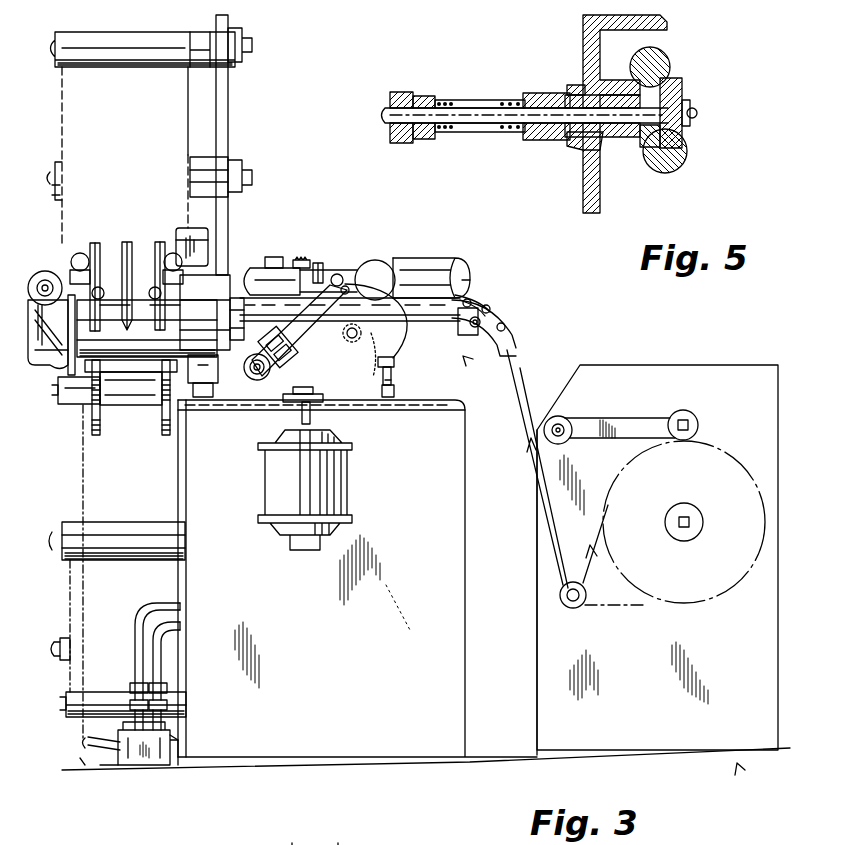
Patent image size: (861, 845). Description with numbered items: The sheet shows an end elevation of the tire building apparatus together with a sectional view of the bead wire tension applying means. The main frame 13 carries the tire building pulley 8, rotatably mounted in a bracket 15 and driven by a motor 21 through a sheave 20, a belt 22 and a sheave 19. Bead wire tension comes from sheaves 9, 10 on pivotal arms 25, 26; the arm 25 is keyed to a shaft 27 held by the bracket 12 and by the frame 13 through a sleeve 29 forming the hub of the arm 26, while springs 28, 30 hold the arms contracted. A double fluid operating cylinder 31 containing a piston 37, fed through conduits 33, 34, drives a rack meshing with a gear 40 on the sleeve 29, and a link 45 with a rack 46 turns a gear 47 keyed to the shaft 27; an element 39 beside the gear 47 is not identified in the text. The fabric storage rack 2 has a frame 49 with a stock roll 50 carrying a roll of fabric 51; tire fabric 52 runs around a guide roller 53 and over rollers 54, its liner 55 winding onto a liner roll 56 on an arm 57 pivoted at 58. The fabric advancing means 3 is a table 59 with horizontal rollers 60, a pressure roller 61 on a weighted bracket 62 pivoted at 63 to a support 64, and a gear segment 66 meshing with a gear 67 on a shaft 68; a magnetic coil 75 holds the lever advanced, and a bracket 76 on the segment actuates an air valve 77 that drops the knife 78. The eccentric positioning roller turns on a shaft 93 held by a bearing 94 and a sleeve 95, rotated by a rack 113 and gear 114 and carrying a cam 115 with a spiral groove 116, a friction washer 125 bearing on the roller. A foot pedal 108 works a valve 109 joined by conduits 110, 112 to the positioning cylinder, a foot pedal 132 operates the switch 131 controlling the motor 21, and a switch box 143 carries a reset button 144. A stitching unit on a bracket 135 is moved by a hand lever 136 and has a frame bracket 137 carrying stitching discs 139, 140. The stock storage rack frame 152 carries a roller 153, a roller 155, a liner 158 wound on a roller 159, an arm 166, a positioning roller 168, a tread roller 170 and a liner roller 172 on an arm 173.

In FIG. 3, the fabric storage rack 2 is at (737, 763).
In FIG. 3, the fabric advancing means 3 is at (463, 356).
In FIG. 3, the pulley 8 is at (136, 365).
In FIG. 3, the sheave 9 is at (88, 425).
In FIG. 3, the sheave 10 is at (168, 425).
In FIG. 5, the bracket 12 is at (413, 80).
In FIG. 3, the main frame 13 is at (450, 637).
In FIG. 5, the main frame 13 is at (669, 22).
In FIG. 3, the bracket 15 is at (50, 360).
In FIG. 3, the sheave 19 is at (246, 412).
In FIG. 3, the sheave 20 is at (312, 414).
In FIG. 3, the motor 21 is at (350, 480).
In FIG. 3, the belt 22 is at (287, 400).
In FIG. 3, the pivotal arm 25 is at (108, 410).
In FIG. 5, the pivotal arm 25 is at (425, 96).
In FIG. 5, the pivotal arm 26 is at (535, 92).
In FIG. 5, the shaft 27 is at (386, 116).
In FIG. 5, the spring 28 is at (452, 100).
In FIG. 5, the sleeve 29 is at (571, 86).
In FIG. 5, the spring 30 is at (505, 100).
In FIG. 3, the double fluid operating cylinder 31 is at (298, 841).
In FIG. 3, the conduit 33 is at (178, 644).
In FIG. 3, the conduit 34 is at (180, 607).
In FIG. 3, the piston 37 is at (345, 841).
In FIG. 5, the disc 39 is at (643, 58).
In FIG. 5, the gear 40 is at (645, 142).
In FIG. 5, the link 45 is at (693, 127).
In FIG. 5, the rack 46 is at (665, 173).
In FIG. 5, the gear 47 is at (682, 84).
In FIG. 3, the frame 49 is at (690, 356).
In FIG. 3, the stock roll 50 is at (684, 541).
In FIG. 3, the roll of fabric 51 is at (718, 596).
In FIG. 3, the tire fabric 52 is at (543, 547).
In FIG. 3, the guide roller 53 is at (575, 608).
In FIG. 3, the rollers 54 is at (505, 322).
In FIG. 3, the liner 55 is at (598, 502).
In FIG. 3, the liner roll 56 is at (688, 412).
In FIG. 3, the arm 57 is at (622, 418).
In FIG. 3, the pivot 58 is at (567, 420).
In FIG. 3, the table 59 is at (456, 338).
In FIG. 3, the horizontal rollers 60 is at (487, 300).
In FIG. 3, the pressure roller 61 is at (339, 273).
In FIG. 3, the weighted bracket 62 is at (347, 282).
In FIG. 3, the pivot 63 is at (350, 282).
In FIG. 3, the support 64 is at (380, 268).
In FIG. 3, the gear segment 66 is at (375, 374).
In FIG. 3, the gear 67 is at (349, 343).
In FIG. 3, the shaft 68 is at (401, 335).
In FIG. 3, the magnetic coil 75 is at (271, 352).
In FIG. 3, the bracket 76 is at (396, 374).
In FIG. 3, the air valve 77 is at (396, 390).
In FIG. 3, the knife 78 is at (319, 263).
In FIG. 3, the shaft 93 is at (42, 272).
In FIG. 3, the bearing 94 is at (54, 272).
In FIG. 3, the sleeve 95 is at (415, 278).
In FIG. 3, the foot pedal 108 is at (85, 739).
In FIG. 3, the fluid operating valve 109 is at (172, 736).
In FIG. 3, the conduit 110 is at (137, 665).
In FIG. 3, the conduit 112 is at (142, 604).
In FIG. 3, the rack 113 is at (279, 243).
In FIG. 3, the gear 114 is at (290, 258).
In FIG. 3, the cam 115 is at (462, 272).
In FIG. 3, the spiral groove 116 is at (440, 262).
In FIG. 3, the friction washer 125 is at (283, 282).
In FIG. 3, the switch 131 is at (146, 767).
In FIG. 3, the foot pedal 132 is at (78, 767).
In FIG. 3, the bracket 135 is at (203, 330).
In FIG. 3, the hand lever 136 is at (128, 244).
In FIG. 3, the bracket 137 is at (92, 245).
In FIG. 3, the disc 139 is at (80, 252).
In FIG. 3, the second stitching disc 140 is at (150, 262).
In FIG. 3, the switch box 143 is at (212, 228).
In FIG. 3, the button 144 is at (182, 226).
In FIG. 3, the frame 152 is at (229, 77).
In FIG. 3, the roller 153 is at (61, 650).
In FIG. 3, the roller 155 is at (67, 714).
In FIG. 3, the liner 158 is at (70, 573).
In FIG. 3, the roller 159 is at (68, 527).
In FIG. 3, the arm 166 is at (198, 160).
In FIG. 3, the positioning roller 168 is at (62, 406).
In FIG. 3, the roller 170 is at (58, 165).
In FIG. 3, the roller 172 is at (112, 22).
In FIG. 3, the arm 173 is at (197, 24).